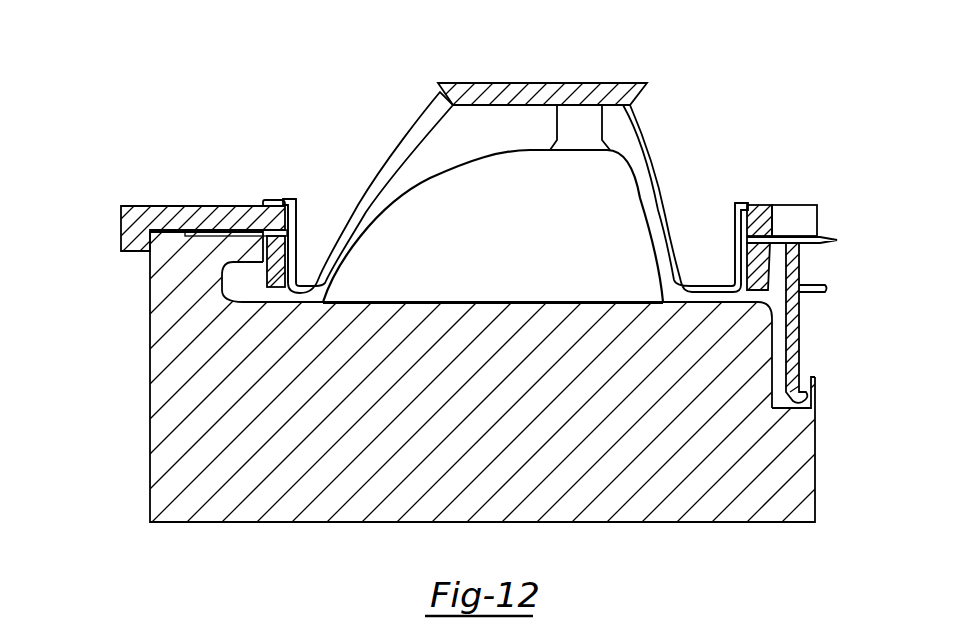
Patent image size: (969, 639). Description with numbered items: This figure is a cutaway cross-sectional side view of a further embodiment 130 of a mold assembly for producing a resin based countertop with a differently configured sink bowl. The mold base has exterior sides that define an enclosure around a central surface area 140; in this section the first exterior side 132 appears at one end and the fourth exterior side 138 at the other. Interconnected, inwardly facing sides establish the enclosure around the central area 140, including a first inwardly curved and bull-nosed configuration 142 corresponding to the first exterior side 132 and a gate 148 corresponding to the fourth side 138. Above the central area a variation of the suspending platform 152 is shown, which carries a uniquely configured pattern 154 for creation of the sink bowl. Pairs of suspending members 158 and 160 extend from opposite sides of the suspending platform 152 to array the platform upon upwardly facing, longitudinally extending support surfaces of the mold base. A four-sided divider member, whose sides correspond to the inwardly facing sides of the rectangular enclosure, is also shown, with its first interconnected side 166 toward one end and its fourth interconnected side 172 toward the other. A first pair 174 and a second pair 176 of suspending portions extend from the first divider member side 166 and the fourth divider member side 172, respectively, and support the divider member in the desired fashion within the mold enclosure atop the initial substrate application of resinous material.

The mold assembly embodiment 130 is at (743, 123).
The first exterior side 132 is at (148, 438).
The fourth exterior side 138 is at (826, 470).
The central surface area 140 is at (531, 302).
The first inwardly curved and bull-nosed configuration 142 is at (232, 290).
The gate 148 is at (800, 319).
The suspending platform 152 is at (403, 130).
The sink bowl pattern 154 is at (487, 128).
The suspending member 158 is at (165, 205).
The suspending member 160 is at (775, 205).
The first interconnected side of divider member 166 is at (298, 225).
The fourth interconnected side of divider member 172 is at (740, 262).
The first pair of suspending portions 174 is at (229, 222).
The second pair of suspending portions 176 is at (815, 237).